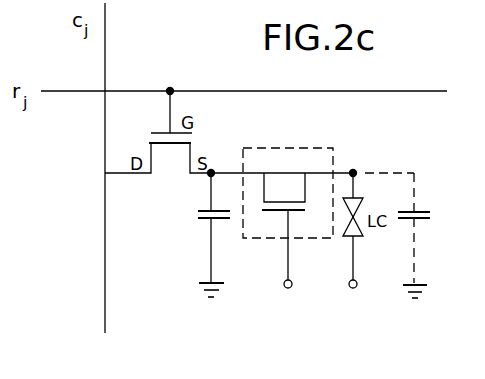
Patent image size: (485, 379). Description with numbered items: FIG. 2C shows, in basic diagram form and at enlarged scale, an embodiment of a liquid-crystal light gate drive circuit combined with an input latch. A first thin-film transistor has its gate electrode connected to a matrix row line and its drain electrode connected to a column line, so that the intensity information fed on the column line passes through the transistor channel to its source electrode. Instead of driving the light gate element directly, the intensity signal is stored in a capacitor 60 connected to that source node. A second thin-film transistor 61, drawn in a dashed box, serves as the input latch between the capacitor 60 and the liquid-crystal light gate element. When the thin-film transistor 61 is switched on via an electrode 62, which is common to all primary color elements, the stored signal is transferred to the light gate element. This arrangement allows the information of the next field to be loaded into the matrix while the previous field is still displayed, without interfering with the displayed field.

The capacitor 60 is at (203, 228).
The thin-film transistor 61 is at (303, 146).
The electrode 62 is at (289, 292).